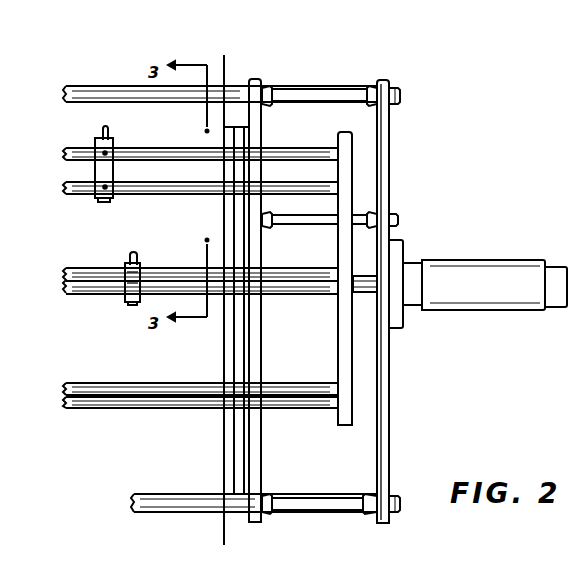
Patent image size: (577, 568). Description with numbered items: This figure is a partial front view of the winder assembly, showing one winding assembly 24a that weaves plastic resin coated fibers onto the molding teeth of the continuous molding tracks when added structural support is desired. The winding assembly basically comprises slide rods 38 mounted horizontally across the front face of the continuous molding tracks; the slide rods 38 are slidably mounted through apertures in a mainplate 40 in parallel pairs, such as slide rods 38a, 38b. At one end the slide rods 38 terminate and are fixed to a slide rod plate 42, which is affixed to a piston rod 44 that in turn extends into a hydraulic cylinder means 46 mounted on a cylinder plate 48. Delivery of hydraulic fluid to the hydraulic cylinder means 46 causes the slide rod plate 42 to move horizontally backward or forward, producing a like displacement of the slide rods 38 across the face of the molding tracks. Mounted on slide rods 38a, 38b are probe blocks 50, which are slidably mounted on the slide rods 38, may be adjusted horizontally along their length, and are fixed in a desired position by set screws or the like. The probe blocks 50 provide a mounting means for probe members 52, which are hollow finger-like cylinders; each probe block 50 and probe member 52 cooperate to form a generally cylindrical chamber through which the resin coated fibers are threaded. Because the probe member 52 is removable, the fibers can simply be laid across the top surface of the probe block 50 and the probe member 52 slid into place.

The winding assembly 24a is at (386, 440).
The slide rods 38 is at (182, 270).
The slide rod 38a is at (178, 150).
The slide rod 38b is at (182, 191).
The mainplate 40 is at (257, 137).
The slide rod plate 42 is at (338, 142).
The piston rod 44 is at (368, 286).
The hydraulic cylinder means 46 is at (497, 296).
The cylinder plate 48 is at (388, 170).
The probe blocks 50 is at (113, 170).
The probe members 52 is at (108, 136).